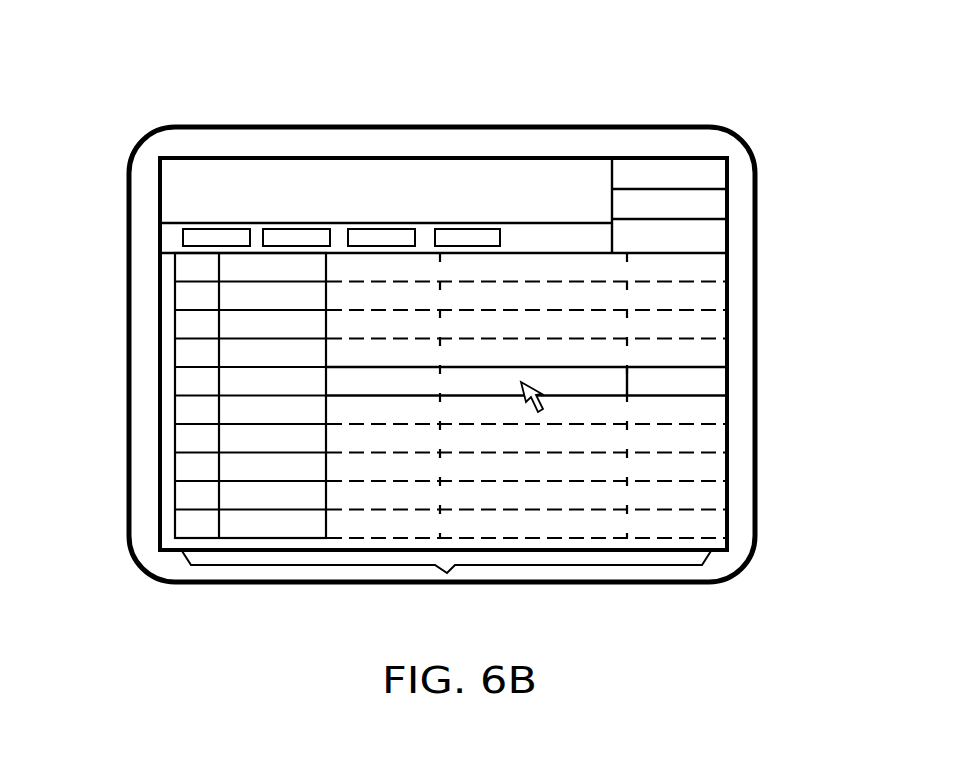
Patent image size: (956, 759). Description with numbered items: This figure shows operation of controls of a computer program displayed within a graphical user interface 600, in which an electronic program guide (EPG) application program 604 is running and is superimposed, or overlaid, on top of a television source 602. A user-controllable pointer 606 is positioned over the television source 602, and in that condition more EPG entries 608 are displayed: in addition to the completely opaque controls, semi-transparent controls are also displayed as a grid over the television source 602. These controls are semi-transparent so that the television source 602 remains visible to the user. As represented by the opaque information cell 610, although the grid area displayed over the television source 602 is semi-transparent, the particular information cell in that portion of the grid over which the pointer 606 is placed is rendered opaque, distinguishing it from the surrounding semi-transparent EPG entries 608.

The graphical user interface 600 is at (158, 297).
The television source 602 is at (702, 297).
The electronic program guide (EPG) application program 604 is at (422, 175).
The user-controllable pointer 606 is at (545, 410).
The EPG entries 608 is at (447, 573).
The opaque information cell 610 is at (615, 379).